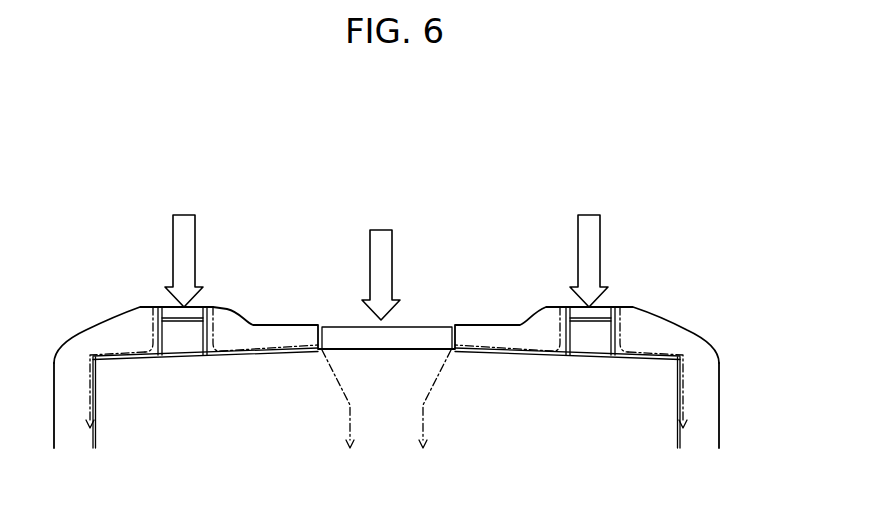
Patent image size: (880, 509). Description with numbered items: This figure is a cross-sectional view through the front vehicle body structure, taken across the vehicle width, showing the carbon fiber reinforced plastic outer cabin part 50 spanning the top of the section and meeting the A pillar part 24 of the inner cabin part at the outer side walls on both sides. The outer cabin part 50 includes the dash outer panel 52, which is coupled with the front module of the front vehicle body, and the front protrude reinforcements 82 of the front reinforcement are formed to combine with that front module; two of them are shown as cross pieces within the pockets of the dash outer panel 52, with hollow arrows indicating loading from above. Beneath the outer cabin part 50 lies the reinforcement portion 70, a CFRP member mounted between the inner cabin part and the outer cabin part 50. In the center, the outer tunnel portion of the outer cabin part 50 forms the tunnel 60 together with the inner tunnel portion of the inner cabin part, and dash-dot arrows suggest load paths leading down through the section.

The outer cabin part 50 is at (107, 313).
The A pillar part 24 is at (720, 395).
The dash outer panel 52 is at (205, 307).
The front protrude reinforcement 82 is at (190, 323).
The tunnel 60 is at (380, 398).
The reinforcement portion 70 is at (495, 357).